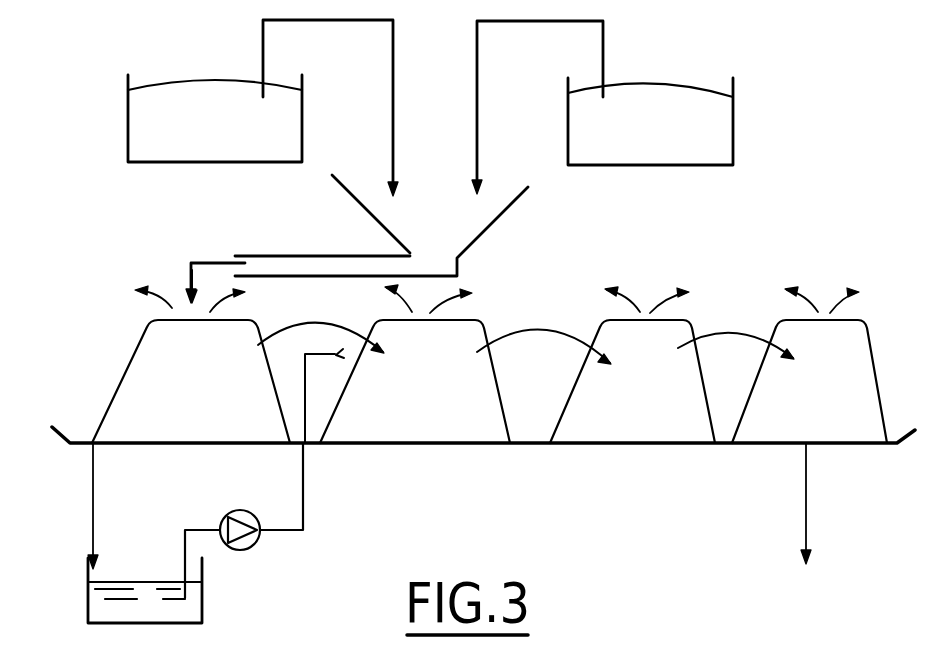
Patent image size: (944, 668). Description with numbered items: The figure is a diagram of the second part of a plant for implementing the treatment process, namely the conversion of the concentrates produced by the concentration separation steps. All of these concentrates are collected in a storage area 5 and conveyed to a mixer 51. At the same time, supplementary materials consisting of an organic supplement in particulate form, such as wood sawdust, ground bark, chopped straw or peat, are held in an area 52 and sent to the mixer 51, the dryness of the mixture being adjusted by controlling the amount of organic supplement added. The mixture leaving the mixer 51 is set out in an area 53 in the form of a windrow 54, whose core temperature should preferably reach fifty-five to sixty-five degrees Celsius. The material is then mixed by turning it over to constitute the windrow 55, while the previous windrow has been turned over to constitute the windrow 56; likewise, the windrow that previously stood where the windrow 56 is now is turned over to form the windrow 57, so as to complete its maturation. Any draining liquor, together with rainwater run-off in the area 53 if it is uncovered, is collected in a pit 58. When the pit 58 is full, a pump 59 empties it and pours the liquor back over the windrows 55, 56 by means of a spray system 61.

The storage area 5 is at (302, 130).
The area 52 is at (733, 133).
The mixer 51 is at (483, 232).
The area 53 is at (58, 428).
The windrow 54 is at (211, 411).
The windrow 55 is at (426, 410).
The windrow 56 is at (646, 412).
The windrow 57 is at (823, 410).
The pit 58 is at (88, 602).
The pump 59 is at (273, 556).
The spray system 61 is at (324, 396).